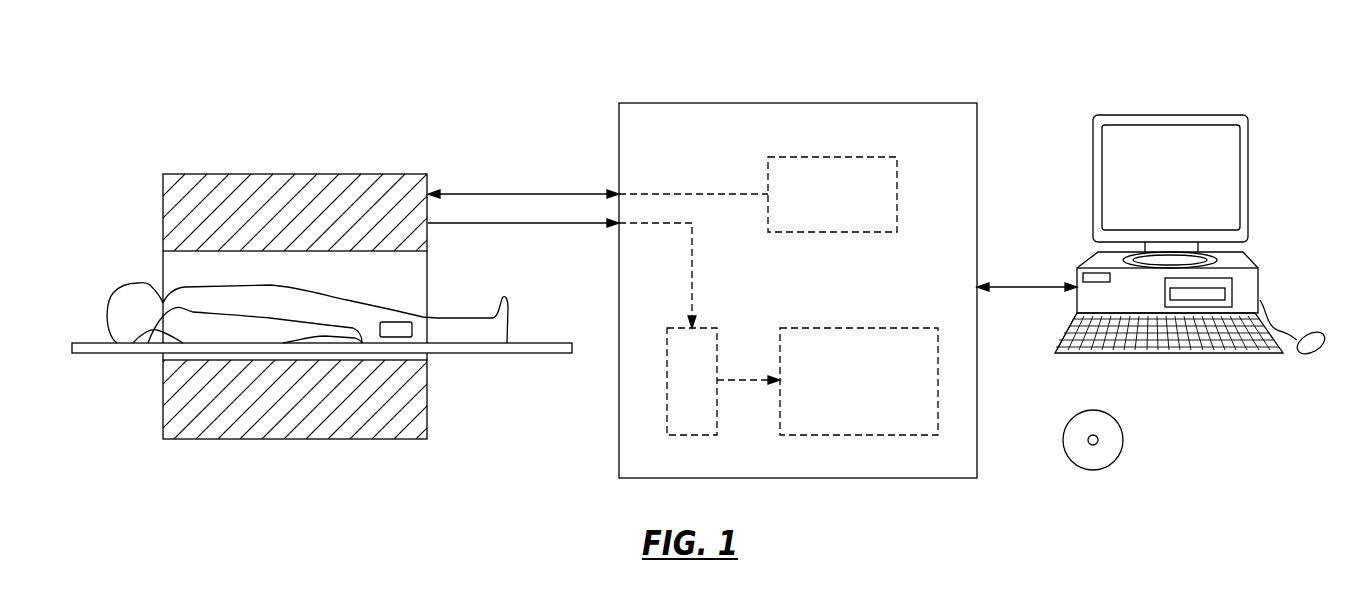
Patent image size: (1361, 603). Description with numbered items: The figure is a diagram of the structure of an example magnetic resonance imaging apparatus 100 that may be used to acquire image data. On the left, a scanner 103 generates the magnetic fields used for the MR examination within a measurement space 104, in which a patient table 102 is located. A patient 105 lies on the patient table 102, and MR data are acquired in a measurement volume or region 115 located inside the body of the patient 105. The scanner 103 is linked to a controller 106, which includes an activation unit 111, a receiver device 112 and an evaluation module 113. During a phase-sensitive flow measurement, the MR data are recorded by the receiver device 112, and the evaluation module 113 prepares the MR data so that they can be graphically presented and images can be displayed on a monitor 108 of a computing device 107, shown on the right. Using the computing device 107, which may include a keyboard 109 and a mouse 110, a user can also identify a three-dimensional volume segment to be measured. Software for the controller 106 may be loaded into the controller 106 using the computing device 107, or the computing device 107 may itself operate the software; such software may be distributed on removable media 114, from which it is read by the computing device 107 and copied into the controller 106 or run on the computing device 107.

The magnetic resonance imaging apparatus 100 is at (538, 82).
The patient table 102 is at (540, 356).
The scanner 103 is at (318, 140).
The measurement space 104 is at (168, 268).
The patient 105 is at (110, 310).
The controller 106 is at (803, 103).
The computing device 107 is at (1172, 114).
The monitor 108 is at (1113, 125).
The keyboard 109 is at (1078, 354).
The mouse 110 is at (1316, 333).
The activation unit 111 is at (870, 233).
The receiver device 112 is at (703, 327).
The evaluation module 113 is at (827, 327).
The removable media 114 is at (1124, 440).
The measurement volume or region 115 is at (418, 323).